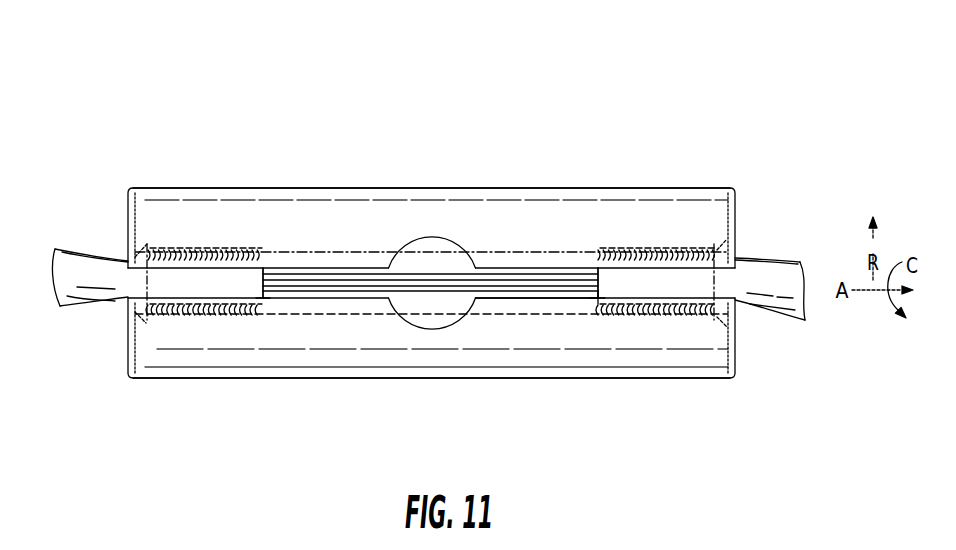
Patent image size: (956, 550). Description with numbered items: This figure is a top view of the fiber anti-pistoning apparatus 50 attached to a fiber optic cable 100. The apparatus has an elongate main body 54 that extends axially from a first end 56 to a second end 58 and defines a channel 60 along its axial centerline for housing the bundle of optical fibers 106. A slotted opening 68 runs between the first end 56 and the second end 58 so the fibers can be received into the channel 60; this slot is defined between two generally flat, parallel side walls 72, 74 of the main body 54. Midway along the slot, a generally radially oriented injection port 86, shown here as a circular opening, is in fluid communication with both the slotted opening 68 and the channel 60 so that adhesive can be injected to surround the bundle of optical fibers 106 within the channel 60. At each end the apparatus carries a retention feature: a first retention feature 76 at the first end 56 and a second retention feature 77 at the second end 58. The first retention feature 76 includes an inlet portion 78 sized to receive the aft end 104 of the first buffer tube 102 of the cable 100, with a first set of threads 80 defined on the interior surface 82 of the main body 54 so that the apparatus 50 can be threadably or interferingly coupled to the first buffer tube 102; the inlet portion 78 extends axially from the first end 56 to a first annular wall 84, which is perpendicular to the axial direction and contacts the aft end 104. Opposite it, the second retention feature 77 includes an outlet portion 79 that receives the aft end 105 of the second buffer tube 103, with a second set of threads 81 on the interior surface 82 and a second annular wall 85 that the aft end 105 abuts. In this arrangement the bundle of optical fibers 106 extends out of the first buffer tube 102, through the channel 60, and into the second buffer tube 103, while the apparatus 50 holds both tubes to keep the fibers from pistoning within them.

The fiber anti-pistoning apparatus 50 is at (489, 72).
The elongate main body 54 is at (557, 207).
The first end 56 is at (735, 192).
The second end 58 is at (127, 190).
The channel 60 is at (325, 253).
The slotted opening 68 is at (365, 262).
The side wall 72 is at (578, 266).
The side wall 74 is at (508, 300).
The first retention feature 76 is at (691, 232).
The second retention feature 77 is at (161, 235).
The inlet portion 78 is at (675, 332).
The outlet portion 79 is at (166, 330).
The first set of threads 80 is at (645, 256).
The second set of threads 81 is at (200, 250).
The interior surface 82 is at (370, 317).
The first annular wall 84 is at (598, 301).
The second annular wall 85 is at (273, 257).
The injection port 86 is at (432, 248).
The fiber optic cable 100 is at (55, 178).
The first buffer tube 102 is at (762, 260).
The second buffer tube 103 is at (80, 262).
The aft end 104 is at (597, 298).
The aft end 105 is at (268, 298).
The bundle of optical fibers 106 is at (295, 274).